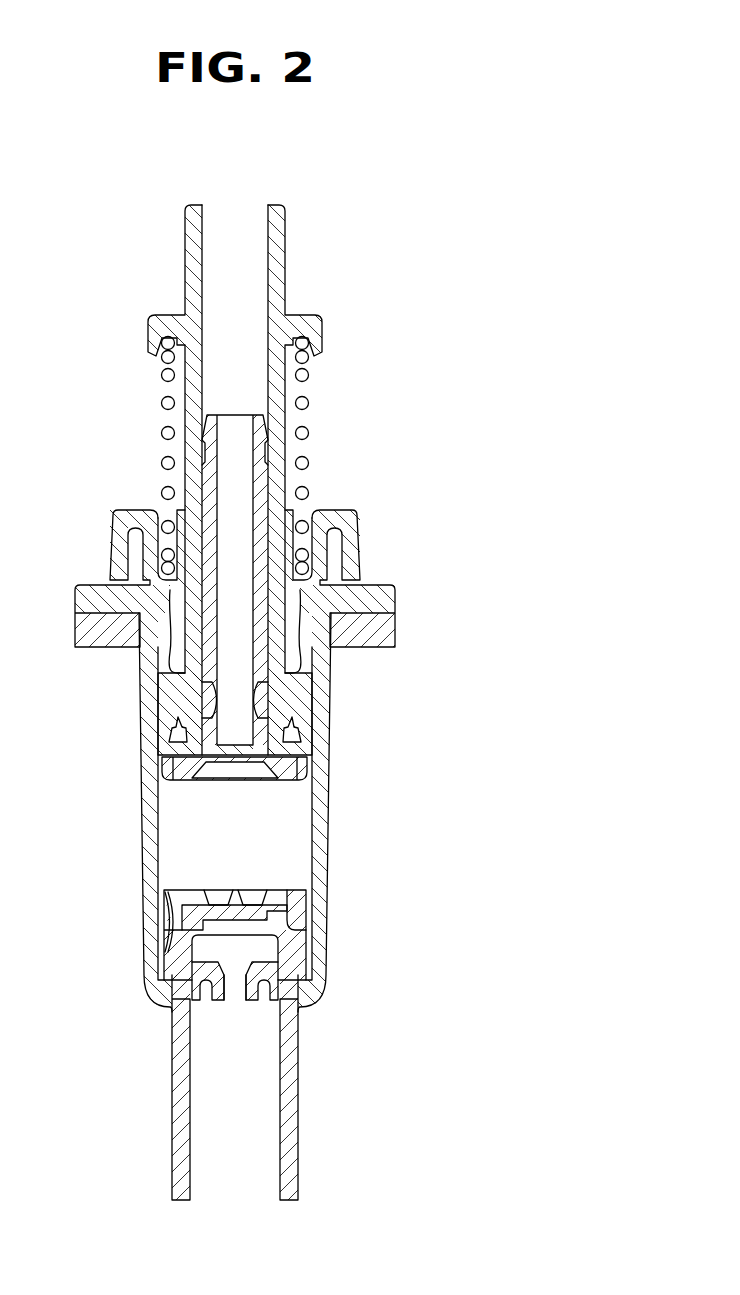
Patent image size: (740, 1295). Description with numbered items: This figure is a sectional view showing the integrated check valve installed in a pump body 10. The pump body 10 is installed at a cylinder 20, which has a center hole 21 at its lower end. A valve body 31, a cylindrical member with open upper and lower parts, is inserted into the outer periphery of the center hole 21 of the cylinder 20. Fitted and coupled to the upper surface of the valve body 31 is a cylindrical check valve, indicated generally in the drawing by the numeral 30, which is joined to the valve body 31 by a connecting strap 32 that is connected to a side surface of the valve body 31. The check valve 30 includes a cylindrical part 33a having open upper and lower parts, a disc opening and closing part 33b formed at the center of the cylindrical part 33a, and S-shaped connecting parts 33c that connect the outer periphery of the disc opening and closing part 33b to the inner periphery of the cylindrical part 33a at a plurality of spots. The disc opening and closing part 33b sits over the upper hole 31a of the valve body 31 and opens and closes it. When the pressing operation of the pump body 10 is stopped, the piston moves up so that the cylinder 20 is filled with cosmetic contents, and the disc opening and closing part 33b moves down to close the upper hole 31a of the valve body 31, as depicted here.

The pump body 10 is at (317, 428).
The cylinder 20 is at (317, 712).
The center hole 21 is at (259, 937).
The valve unit 30 is at (245, 895).
The valve body 31 is at (308, 988).
The upper hole 31a is at (300, 957).
The connecting strap 32 is at (163, 922).
The cylindrical part 33a is at (305, 898).
The disc opening and closing part 33b is at (225, 892).
The S-shaped connecting parts 33c is at (193, 893).